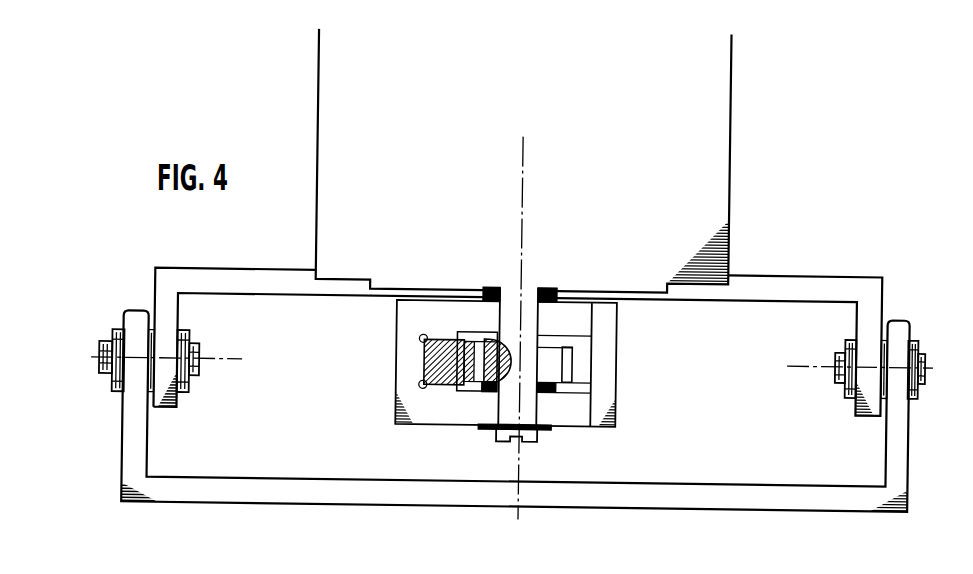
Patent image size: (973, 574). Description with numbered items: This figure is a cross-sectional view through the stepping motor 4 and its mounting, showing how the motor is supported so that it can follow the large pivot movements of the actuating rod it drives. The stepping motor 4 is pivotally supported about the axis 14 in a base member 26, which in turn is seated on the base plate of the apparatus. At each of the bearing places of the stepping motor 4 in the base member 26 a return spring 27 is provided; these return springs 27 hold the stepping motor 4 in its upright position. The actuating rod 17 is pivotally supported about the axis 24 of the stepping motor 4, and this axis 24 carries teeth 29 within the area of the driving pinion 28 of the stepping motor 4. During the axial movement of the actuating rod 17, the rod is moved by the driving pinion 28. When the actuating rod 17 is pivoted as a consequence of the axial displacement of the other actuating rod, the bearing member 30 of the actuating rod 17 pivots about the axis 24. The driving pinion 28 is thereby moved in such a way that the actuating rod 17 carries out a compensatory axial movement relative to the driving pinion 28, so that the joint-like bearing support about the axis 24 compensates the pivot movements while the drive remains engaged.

The stepping motor 4 is at (708, 165).
The axis 14 is at (93, 356).
The actuating rod 17 is at (431, 367).
The axis 24 is at (521, 161).
The base member 26 is at (325, 475).
The return spring 27 is at (190, 333).
The driving pinion 28 is at (554, 367).
The teeth 29 is at (472, 328).
The bearing member 30 is at (408, 324).